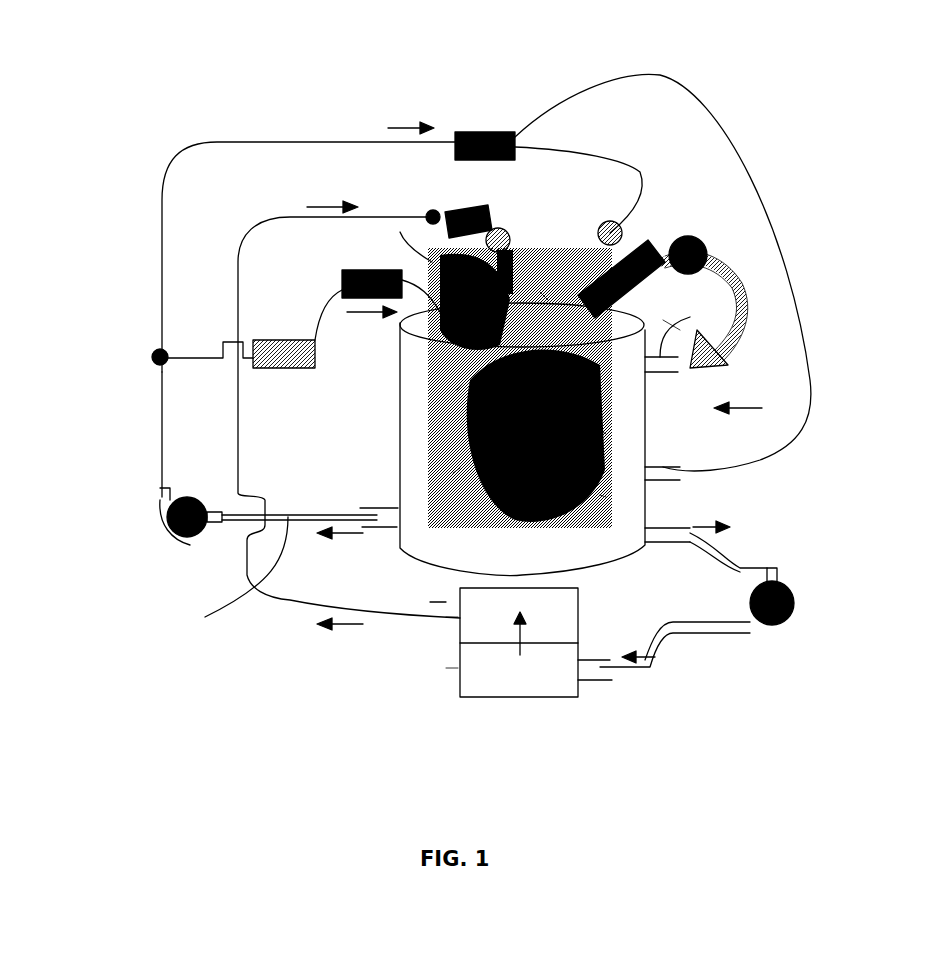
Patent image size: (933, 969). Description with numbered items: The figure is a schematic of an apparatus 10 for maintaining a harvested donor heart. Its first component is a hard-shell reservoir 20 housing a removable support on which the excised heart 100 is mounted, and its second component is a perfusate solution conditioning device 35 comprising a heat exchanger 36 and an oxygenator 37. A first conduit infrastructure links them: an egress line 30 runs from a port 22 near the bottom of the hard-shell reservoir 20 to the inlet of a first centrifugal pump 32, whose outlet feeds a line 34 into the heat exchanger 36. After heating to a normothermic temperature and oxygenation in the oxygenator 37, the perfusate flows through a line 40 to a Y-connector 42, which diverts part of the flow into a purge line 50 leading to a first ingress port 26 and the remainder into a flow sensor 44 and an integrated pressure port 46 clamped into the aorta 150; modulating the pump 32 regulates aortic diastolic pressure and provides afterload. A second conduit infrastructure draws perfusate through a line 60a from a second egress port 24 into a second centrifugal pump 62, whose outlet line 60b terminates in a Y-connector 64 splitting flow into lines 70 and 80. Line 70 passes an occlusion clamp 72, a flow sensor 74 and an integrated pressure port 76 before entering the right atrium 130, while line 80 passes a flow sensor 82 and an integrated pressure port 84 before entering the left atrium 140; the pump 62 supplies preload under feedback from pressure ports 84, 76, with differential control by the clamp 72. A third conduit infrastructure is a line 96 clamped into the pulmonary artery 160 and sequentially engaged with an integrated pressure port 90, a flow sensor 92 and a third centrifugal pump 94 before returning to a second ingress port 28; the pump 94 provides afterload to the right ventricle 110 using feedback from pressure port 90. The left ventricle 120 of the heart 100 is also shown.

The apparatus 10 is at (845, 226).
The hard-shell reservoir 20 is at (577, 573).
The port 22 is at (657, 547).
The second egress port 24 is at (383, 527).
The first ingress port 26 is at (663, 480).
The second ingress port 28 is at (663, 320).
The egress line 30 is at (733, 565).
The first centrifugal pump 32 is at (797, 598).
The line 34 is at (683, 630).
The perfusate solution conditioning device 35 is at (555, 697).
The heat exchanger 36 is at (472, 672).
The oxygenator 37 is at (478, 625).
The line 40 is at (257, 237).
The Y-connector 42 is at (433, 210).
The flow sensor 44 is at (462, 207).
The integrated pressure port 46 is at (503, 228).
The purge line 50 is at (533, 120).
The line 60a is at (228, 579).
The line 60b is at (163, 470).
The second centrifugal pump 62 is at (187, 540).
The Y-connector 64 is at (157, 362).
The line 70 is at (328, 290).
The occlusion clamp 72 is at (290, 370).
The flow sensor 74 is at (387, 270).
The integrated pressure port 76 is at (432, 262).
The line 80 is at (163, 215).
The flow sensor 82 is at (480, 132).
The integrated pressure port 84 is at (623, 227).
The integrated pressure port 90 is at (655, 308).
The flow sensor 92 is at (640, 243).
The third centrifugal pump 94 is at (688, 236).
The line 96 is at (730, 282).
The excised heart 100 is at (483, 505).
The right ventricle 110 is at (453, 473).
The left ventricle 120 is at (600, 495).
The right atrium 130 is at (457, 390).
The left atrium 140 is at (600, 430).
The aorta 150 is at (542, 293).
The pulmonary artery 160 is at (578, 372).